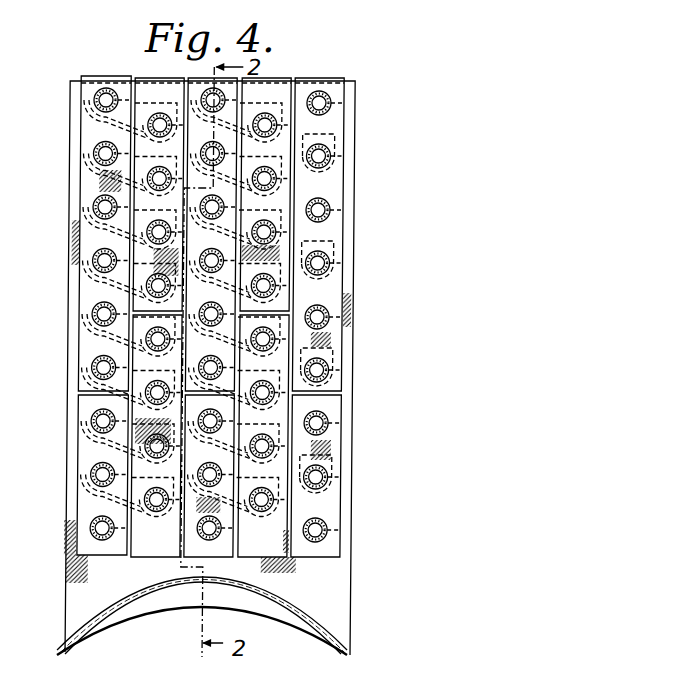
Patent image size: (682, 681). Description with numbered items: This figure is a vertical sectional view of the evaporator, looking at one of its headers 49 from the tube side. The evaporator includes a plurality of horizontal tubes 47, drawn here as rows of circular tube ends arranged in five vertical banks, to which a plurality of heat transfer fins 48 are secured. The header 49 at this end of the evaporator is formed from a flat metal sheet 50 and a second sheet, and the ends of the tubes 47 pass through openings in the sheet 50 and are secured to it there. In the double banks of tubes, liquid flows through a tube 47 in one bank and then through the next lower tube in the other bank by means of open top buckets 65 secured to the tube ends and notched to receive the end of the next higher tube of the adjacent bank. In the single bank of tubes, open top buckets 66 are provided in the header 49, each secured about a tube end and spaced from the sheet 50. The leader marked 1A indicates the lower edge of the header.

The blade body 1A is at (63, 652).
The horizontal tube 47 is at (93, 470).
The heat transfer fin 48 is at (88, 234).
The header 49 is at (357, 507).
The flat metal sheet 50 is at (342, 588).
The open top bucket 65 is at (92, 126).
The open top bucket 66 is at (335, 139).